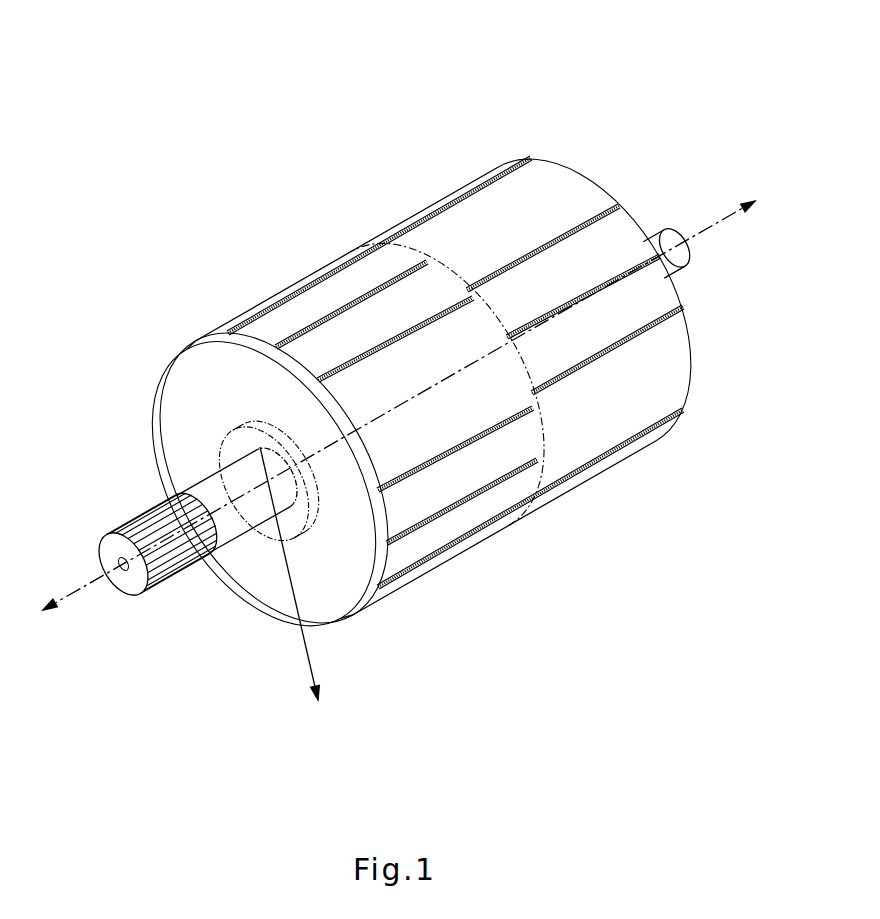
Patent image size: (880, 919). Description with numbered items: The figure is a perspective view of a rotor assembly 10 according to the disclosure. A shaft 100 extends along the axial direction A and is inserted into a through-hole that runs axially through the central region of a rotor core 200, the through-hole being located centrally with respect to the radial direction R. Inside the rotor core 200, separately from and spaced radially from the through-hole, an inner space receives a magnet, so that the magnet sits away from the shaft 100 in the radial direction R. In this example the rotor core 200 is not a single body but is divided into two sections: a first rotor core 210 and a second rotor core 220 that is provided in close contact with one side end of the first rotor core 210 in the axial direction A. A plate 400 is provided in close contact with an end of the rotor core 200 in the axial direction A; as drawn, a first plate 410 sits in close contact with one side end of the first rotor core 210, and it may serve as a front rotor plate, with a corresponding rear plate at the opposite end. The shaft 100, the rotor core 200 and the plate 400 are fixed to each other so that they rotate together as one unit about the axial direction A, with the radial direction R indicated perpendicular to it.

The rotor assembly 10 is at (82, 37).
The shaft 100 is at (235, 528).
The rotor core 200 is at (414, 96).
The first rotor core 210 is at (357, 288).
The second rotor core 220 is at (447, 207).
The plate 400 is at (113, 360).
The first plate 410 is at (193, 383).
The axial direction A is at (70, 590).
The radial direction R is at (313, 668).